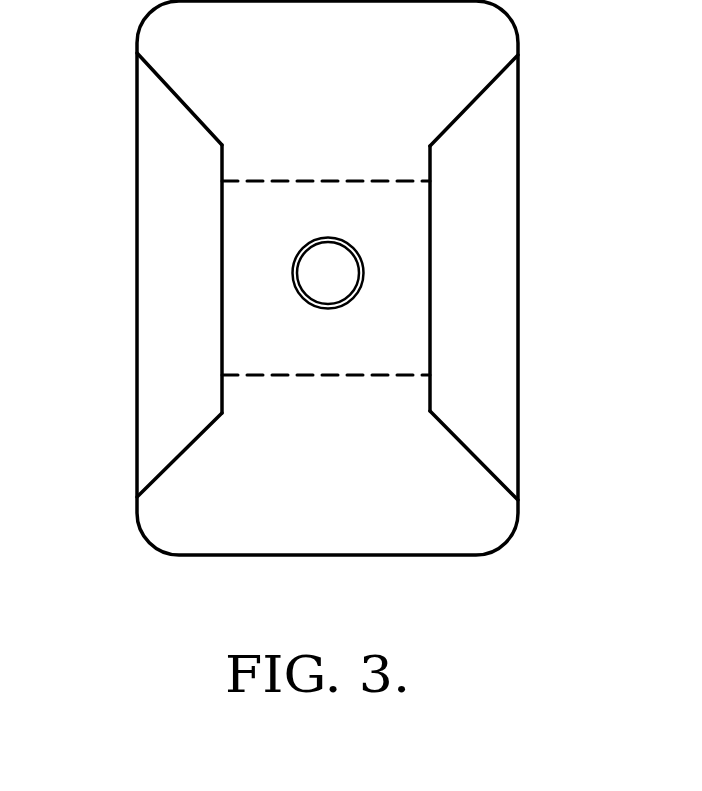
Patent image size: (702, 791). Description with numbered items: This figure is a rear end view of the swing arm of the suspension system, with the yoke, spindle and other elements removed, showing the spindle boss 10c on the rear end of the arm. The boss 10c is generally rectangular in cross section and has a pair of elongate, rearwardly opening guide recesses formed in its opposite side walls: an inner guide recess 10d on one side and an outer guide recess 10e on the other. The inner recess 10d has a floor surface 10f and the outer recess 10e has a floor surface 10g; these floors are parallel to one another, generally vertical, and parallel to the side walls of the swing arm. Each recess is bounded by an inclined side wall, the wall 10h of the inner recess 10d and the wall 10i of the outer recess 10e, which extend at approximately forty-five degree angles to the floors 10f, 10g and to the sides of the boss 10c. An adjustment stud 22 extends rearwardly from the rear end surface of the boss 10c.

The spindle boss 10c is at (491, 59).
The side wall of inner guide recess 10h is at (462, 116).
The side wall of outer guide recess 10i is at (172, 93).
The outer guide recess 10e is at (168, 287).
The floor surface of outer guide recess 10g is at (222, 354).
The inner guide recess 10d is at (493, 261).
The floor surface of inner guide recess 10f is at (430, 297).
The adjustment stud 22 is at (361, 287).